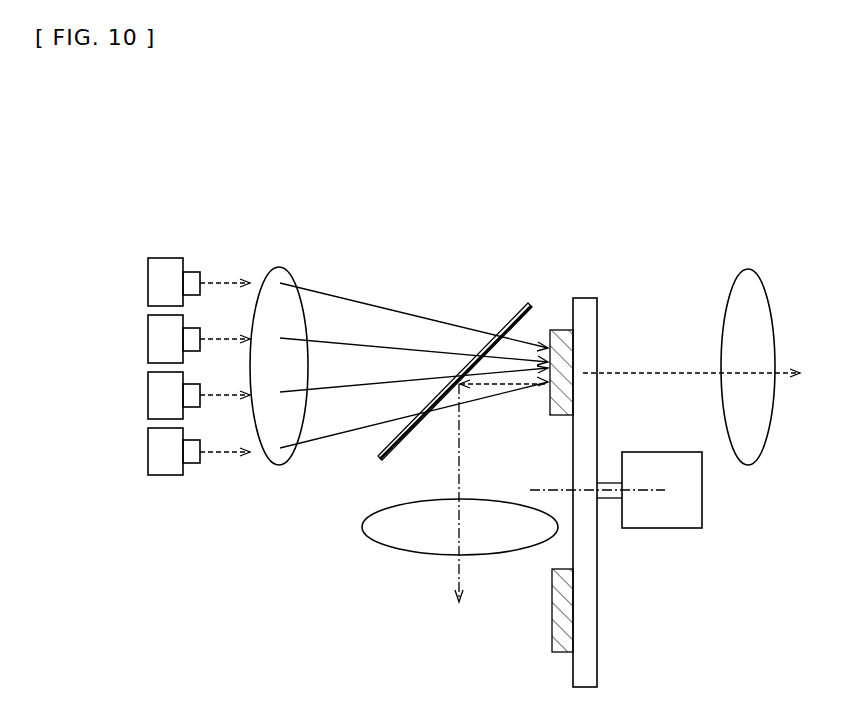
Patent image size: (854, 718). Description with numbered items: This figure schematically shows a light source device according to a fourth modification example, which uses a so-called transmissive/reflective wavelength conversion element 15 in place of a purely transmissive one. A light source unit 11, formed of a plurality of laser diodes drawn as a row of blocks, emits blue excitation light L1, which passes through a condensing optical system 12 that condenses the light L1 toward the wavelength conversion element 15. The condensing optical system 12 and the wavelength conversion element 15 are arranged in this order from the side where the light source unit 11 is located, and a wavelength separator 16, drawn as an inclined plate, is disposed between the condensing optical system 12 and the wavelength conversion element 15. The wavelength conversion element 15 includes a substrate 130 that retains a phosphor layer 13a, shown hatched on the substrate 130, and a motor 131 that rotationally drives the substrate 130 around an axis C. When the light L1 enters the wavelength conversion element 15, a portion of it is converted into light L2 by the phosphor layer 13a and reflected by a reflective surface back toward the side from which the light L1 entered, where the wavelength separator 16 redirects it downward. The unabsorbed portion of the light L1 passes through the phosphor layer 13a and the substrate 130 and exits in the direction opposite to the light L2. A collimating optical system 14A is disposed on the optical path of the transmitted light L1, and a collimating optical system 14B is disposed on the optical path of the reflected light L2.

The light source unit 11 is at (212, 196).
The condensing optical system 12 is at (258, 196).
The wavelength conversion element 15 is at (590, 237).
The wavelength separator 16 is at (518, 310).
The substrate 130 is at (588, 631).
The phosphor layer 13a is at (562, 340).
The motor 131 is at (661, 531).
The axis C is at (552, 489).
The light L1 is at (350, 295).
The light L2 is at (464, 434).
The collimating optical system 14A is at (648, 196).
The collimating optical system 14B is at (352, 490).